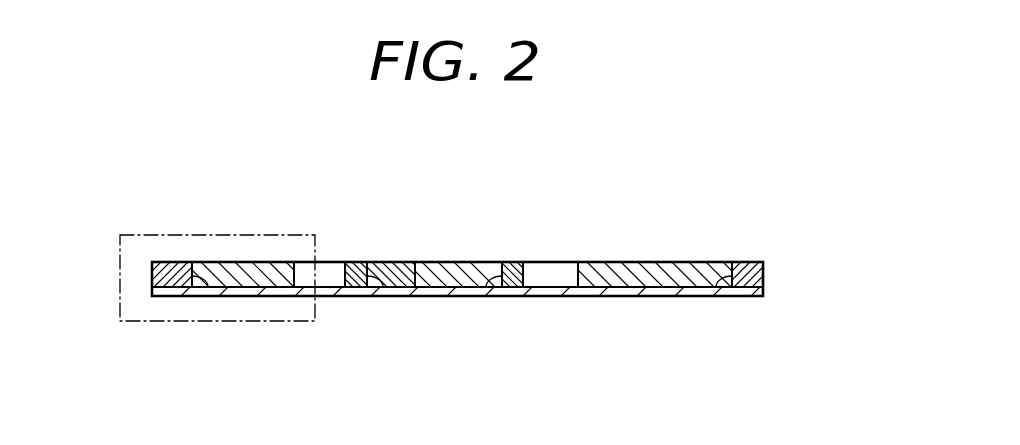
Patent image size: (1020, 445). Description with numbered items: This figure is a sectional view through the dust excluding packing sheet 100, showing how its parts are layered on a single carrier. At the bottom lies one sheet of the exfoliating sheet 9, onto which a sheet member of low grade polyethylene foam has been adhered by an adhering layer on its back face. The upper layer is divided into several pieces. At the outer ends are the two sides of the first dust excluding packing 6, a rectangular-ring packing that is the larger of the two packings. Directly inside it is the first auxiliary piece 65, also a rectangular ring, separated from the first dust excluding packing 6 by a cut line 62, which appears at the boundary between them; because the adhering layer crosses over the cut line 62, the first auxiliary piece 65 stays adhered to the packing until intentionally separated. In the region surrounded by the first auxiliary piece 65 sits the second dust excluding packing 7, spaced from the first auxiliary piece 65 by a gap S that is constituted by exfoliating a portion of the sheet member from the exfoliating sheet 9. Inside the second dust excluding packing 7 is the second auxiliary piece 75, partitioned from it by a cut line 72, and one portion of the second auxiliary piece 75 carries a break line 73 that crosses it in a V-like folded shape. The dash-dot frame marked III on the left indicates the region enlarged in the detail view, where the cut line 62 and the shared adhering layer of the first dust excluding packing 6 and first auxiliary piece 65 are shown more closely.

The dust excluding packing sheet 100 is at (762, 242).
The exfoliating sheet 9 is at (600, 296).
The first dust excluding packing 6 is at (176, 262).
The cut line 62 is at (206, 296).
The first auxiliary piece 65 is at (248, 262).
The gap S is at (333, 262).
The second dust excluding packing 7 is at (356, 262).
The cut line 72 is at (385, 296).
The break line 73 is at (398, 262).
The second auxiliary piece 75 is at (462, 262).
The section III view region III is at (142, 235).